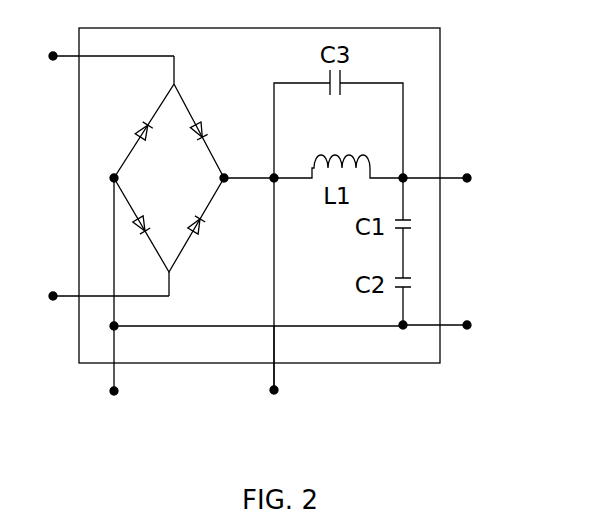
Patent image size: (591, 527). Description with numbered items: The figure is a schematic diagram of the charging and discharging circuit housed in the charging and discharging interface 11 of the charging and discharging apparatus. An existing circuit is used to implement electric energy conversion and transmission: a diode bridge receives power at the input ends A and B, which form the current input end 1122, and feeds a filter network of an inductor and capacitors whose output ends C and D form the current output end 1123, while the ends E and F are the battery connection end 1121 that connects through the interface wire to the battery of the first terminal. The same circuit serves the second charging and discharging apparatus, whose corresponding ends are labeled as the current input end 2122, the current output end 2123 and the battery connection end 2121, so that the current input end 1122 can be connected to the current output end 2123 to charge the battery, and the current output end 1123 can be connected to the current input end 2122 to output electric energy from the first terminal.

The charging and discharging interface 11 is at (440, 62).
The current input end 1122 is at (22, 112).
The current input end 2122 is at (22, 234).
The current output end 1123 is at (535, 197).
The current output end 2123 is at (535, 303).
The battery connection end 1121 is at (157, 430).
The second terminals (E, F) 2121 is at (245, 383).